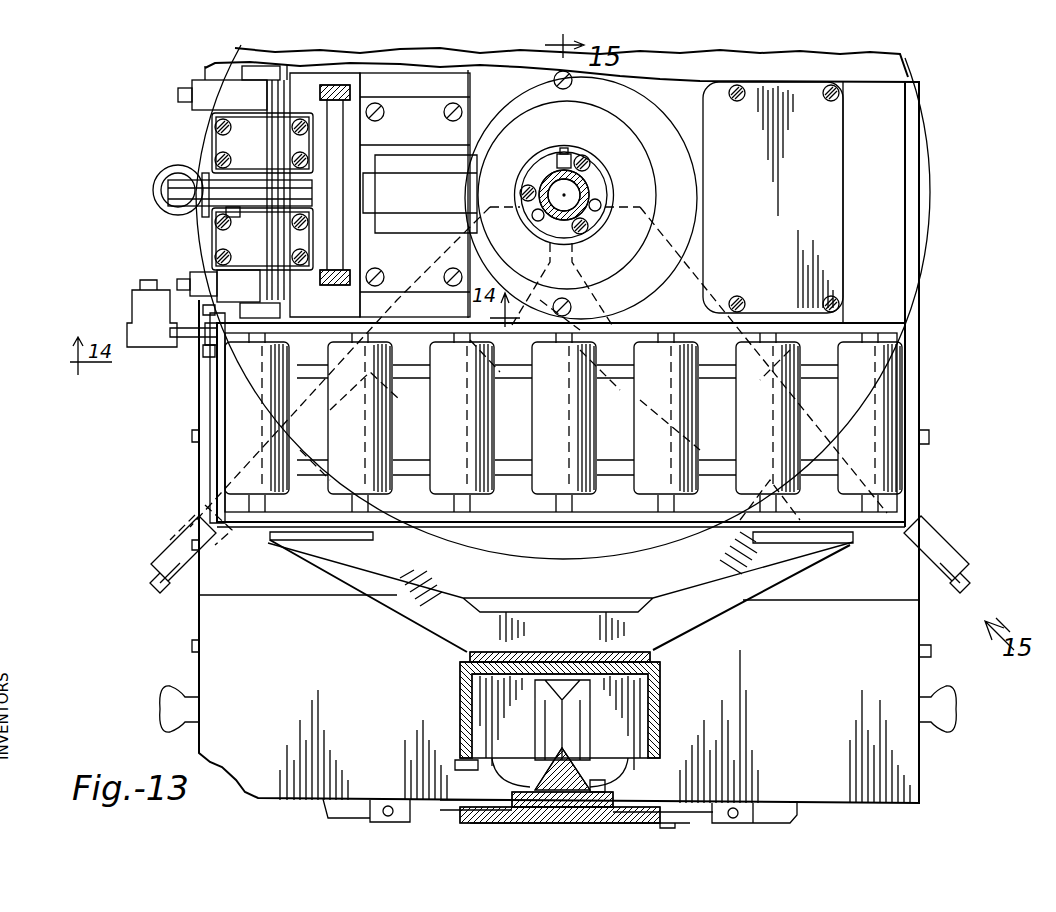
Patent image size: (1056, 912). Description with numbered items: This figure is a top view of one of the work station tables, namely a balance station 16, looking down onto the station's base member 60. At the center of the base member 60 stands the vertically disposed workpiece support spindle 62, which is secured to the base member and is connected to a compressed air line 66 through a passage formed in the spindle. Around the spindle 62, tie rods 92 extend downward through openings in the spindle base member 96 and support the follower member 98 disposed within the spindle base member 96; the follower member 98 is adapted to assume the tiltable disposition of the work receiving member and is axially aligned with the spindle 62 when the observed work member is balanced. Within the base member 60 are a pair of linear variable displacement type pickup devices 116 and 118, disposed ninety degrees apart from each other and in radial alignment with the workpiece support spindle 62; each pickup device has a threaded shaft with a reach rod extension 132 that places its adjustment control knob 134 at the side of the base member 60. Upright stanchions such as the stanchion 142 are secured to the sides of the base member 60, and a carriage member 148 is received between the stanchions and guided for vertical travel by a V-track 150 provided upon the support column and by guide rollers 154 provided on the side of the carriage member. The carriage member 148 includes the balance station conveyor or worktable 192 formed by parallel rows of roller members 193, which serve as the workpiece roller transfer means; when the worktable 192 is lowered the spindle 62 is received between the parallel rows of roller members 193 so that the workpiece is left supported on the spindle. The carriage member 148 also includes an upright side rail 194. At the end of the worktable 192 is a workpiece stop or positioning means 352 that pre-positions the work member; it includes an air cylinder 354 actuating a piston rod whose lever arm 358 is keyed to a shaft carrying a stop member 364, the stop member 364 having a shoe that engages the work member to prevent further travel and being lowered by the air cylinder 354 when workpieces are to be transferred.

The balance station 16 is at (930, 408).
The base member 60 is at (918, 340).
The workpiece support spindle 62 is at (590, 192).
The compressed air line 66 is at (562, 150).
The tie rods 92 is at (586, 160).
The spindle base member 96 is at (588, 120).
The follower member 98 is at (542, 166).
The pickup device 116 is at (478, 212).
The pickup device 118 is at (528, 371).
The reach rod extension 132 is at (314, 432).
The adjustment control knob 134 is at (168, 576).
The stanchion 142 is at (622, 806).
The carriage member 148 is at (402, 608).
The V-track 150 is at (506, 770).
The guide roller 154 is at (576, 750).
The balance station conveyor or worktable 192 is at (572, 532).
The roller members 193 is at (537, 437).
The upright side rail 194 is at (656, 716).
The workpiece stop or positioning means 352 is at (155, 188).
The air cylinder 354 is at (210, 196).
The lever arm 358 is at (228, 214).
The stop member 364 is at (215, 100).